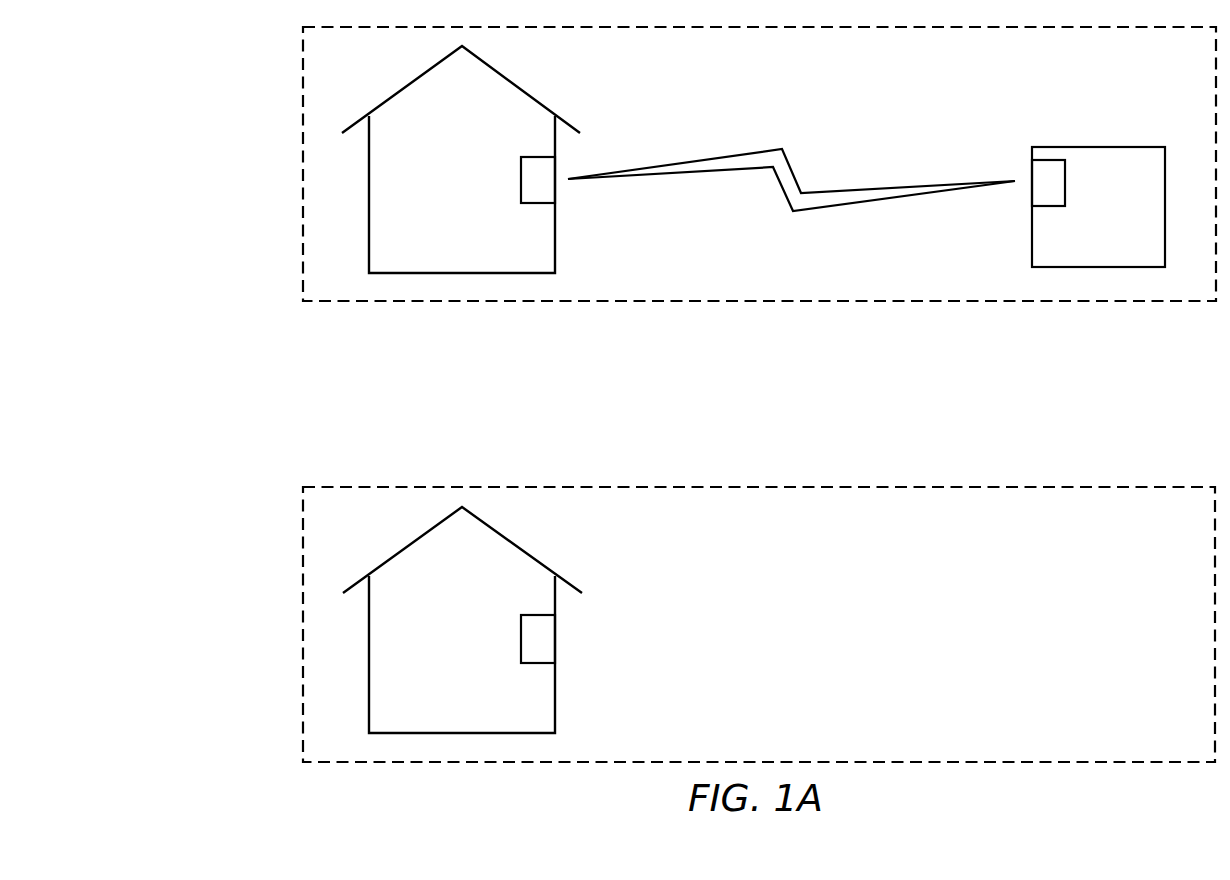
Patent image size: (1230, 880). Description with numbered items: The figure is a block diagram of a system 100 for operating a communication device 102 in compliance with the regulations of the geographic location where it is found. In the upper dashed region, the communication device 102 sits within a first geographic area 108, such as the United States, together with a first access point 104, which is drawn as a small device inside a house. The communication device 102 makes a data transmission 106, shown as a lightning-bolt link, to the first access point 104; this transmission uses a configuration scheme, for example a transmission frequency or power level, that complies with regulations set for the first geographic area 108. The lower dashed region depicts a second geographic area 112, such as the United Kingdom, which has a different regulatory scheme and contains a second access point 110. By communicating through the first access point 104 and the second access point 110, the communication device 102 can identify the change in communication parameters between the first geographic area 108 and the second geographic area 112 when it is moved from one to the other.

The system 100 is at (137, 54).
The communication device 102 is at (1048, 160).
The first access point 104 is at (521, 175).
The data transmission 106 is at (843, 190).
The first geographic area 108 is at (303, 167).
The second access point 110 is at (521, 637).
The second geographic area 112 is at (303, 624).